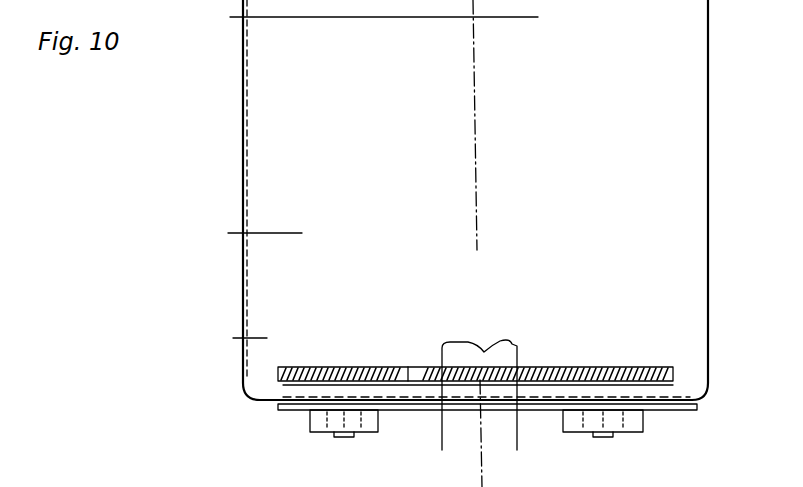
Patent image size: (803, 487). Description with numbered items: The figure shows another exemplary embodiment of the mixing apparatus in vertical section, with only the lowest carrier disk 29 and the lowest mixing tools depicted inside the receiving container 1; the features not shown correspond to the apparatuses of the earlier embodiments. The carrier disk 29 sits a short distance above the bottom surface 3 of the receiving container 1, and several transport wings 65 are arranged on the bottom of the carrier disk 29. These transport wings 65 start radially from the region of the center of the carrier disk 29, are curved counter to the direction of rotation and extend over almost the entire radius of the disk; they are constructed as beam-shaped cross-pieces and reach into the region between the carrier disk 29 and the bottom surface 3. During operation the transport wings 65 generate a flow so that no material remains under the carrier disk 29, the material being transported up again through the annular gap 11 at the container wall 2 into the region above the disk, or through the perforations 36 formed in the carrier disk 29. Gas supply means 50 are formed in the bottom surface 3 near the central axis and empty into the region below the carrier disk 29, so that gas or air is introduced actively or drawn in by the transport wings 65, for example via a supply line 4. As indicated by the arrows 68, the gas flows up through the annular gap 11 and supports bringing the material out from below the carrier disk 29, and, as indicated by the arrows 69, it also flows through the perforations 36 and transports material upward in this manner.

The receiving container 1 is at (204, 295).
The container / vessel 2 is at (710, 210).
The bottom surface 3 is at (690, 404).
The pipe / outlet 4 is at (452, 448).
The annular gap 11 is at (262, 387).
The carrier disk 29 is at (293, 366).
The perforations 36 is at (413, 372).
The gas supply means 50 is at (397, 422).
The transport wings 65 is at (270, 486).
The arrows 68 is at (665, 392).
The arrows 69 is at (403, 400).